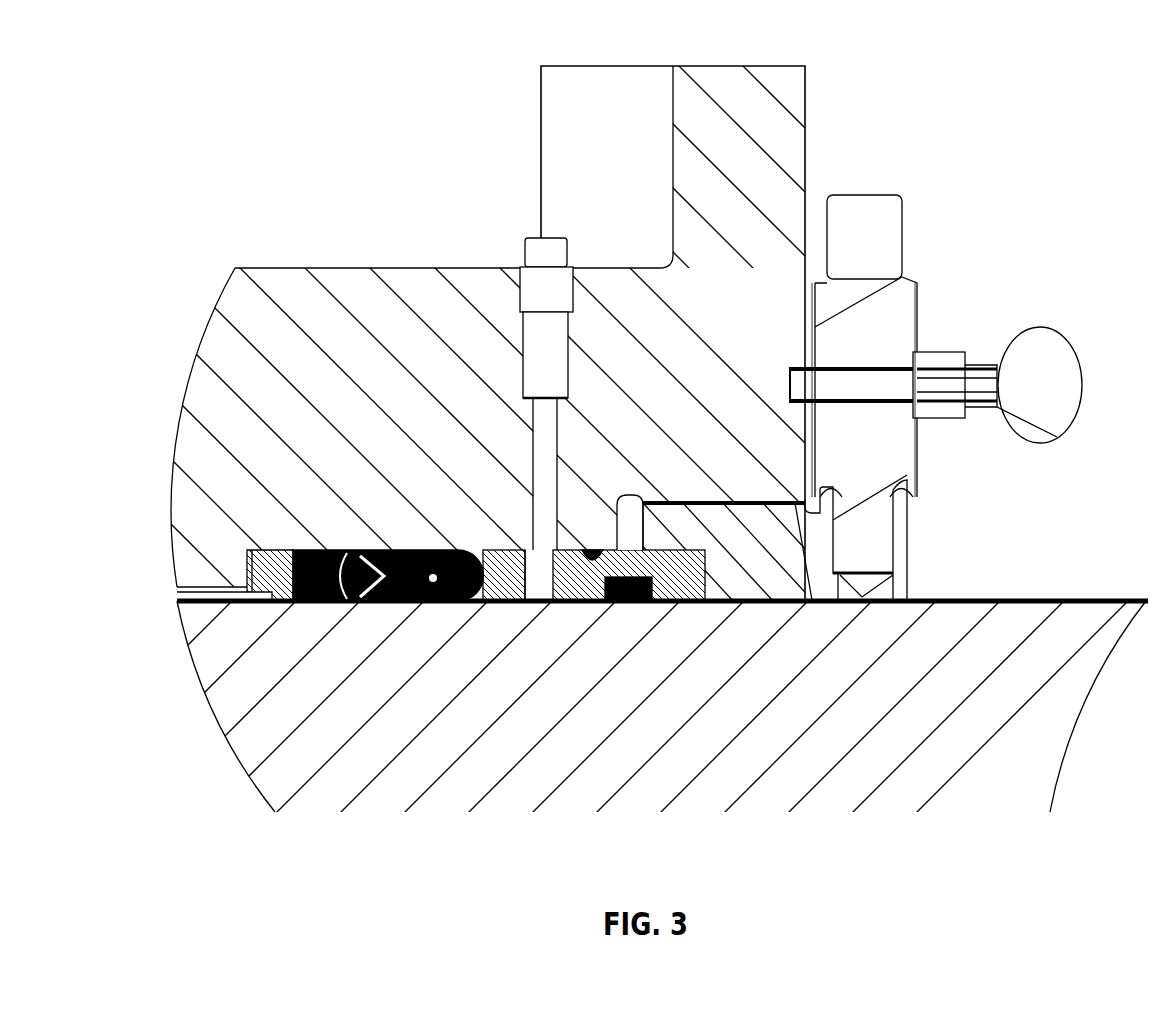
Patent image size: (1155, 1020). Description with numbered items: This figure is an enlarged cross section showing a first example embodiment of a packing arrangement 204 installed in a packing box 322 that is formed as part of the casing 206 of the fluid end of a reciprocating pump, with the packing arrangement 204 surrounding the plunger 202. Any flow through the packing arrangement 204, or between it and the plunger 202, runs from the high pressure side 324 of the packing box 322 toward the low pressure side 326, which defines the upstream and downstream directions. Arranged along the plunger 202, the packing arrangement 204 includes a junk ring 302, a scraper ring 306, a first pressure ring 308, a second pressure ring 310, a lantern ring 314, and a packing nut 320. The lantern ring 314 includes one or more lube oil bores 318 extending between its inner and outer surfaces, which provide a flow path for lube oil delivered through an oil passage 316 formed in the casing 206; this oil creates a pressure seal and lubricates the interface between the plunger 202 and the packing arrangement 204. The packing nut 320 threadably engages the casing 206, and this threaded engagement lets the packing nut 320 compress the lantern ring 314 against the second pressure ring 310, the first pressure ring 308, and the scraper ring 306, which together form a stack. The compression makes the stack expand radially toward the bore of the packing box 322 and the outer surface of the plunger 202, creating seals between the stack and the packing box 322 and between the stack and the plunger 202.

The plunger 202 is at (792, 779).
The packing arrangement 204 is at (320, 437).
The casing 206 is at (415, 363).
The junk ring 302 is at (250, 560).
The scraper ring 306 is at (305, 560).
The first pressure ring 308 is at (383, 555).
The second pressure ring 310 is at (455, 555).
The lantern ring 314 is at (497, 598).
The oil passage 316 is at (540, 345).
The lube oil bore 318 is at (541, 598).
The packing nut 320 is at (745, 530).
The packing box 322 is at (624, 512).
The high pressure side 324 is at (210, 600).
The low pressure side 326 is at (937, 586).